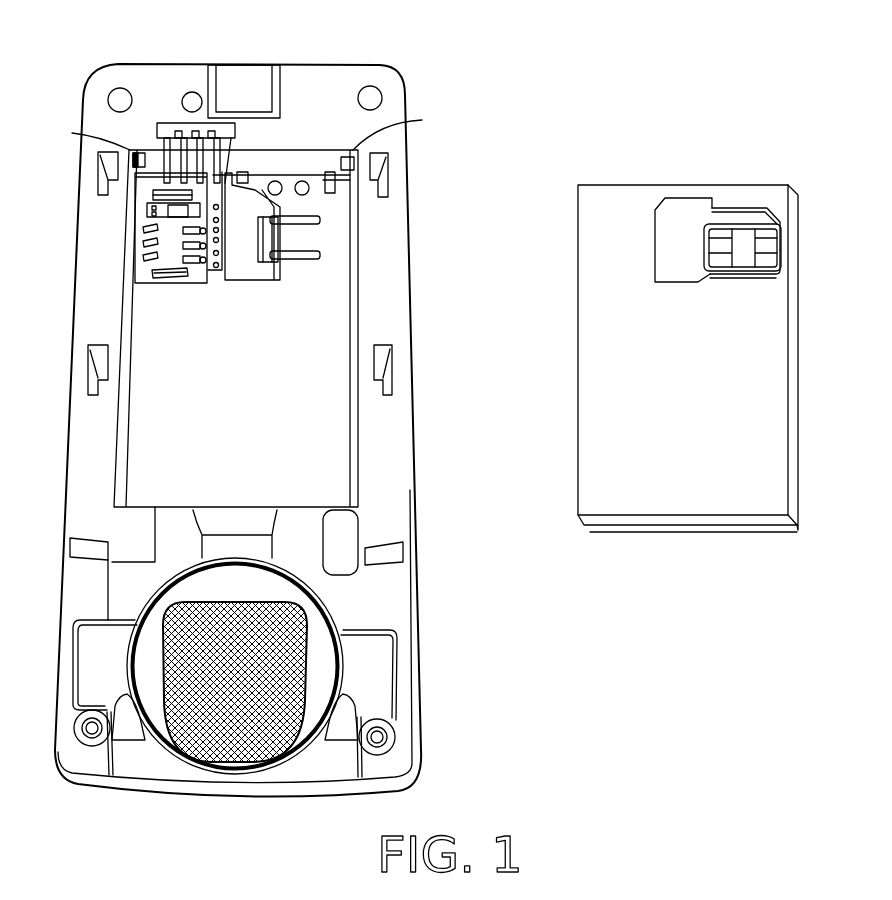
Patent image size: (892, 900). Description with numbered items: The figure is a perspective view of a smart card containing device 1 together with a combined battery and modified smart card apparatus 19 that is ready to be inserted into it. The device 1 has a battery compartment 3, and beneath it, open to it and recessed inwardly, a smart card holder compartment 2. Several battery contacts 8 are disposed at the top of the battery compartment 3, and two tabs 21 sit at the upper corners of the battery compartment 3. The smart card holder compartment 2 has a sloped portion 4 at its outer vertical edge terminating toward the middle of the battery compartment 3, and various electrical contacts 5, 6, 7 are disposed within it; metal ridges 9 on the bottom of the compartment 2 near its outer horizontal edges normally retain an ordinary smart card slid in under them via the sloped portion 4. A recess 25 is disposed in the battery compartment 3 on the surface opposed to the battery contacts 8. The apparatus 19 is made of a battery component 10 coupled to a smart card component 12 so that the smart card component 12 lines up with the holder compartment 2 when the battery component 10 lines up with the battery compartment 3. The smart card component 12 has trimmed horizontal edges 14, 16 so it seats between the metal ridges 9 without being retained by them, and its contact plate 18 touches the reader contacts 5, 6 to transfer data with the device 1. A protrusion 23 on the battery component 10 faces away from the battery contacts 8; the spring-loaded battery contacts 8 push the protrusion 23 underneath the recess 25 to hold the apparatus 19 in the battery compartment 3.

The smart card containing device 1 is at (177, 58).
The smart card holder compartment 2 is at (245, 215).
The battery compartment 3 is at (312, 205).
The sloped portion 4 is at (273, 268).
The electrical contact 5 is at (150, 227).
The electrical contact 6 is at (187, 233).
The electrical contact 7 is at (218, 265).
The battery contacts 8 is at (178, 146).
The metal ridges 9 is at (167, 187).
The battery component 10 is at (623, 203).
The smart card component 12 is at (683, 203).
The trimmed horizontal edge 14 is at (740, 207).
The trimmed horizontal edge 16 is at (740, 277).
The contact plate 18 is at (740, 253).
The combined battery and modified smart card apparatus 19 is at (682, 342).
The tabs 21 is at (244, 128).
The protrusion 23 is at (703, 532).
The recess 25 is at (297, 505).